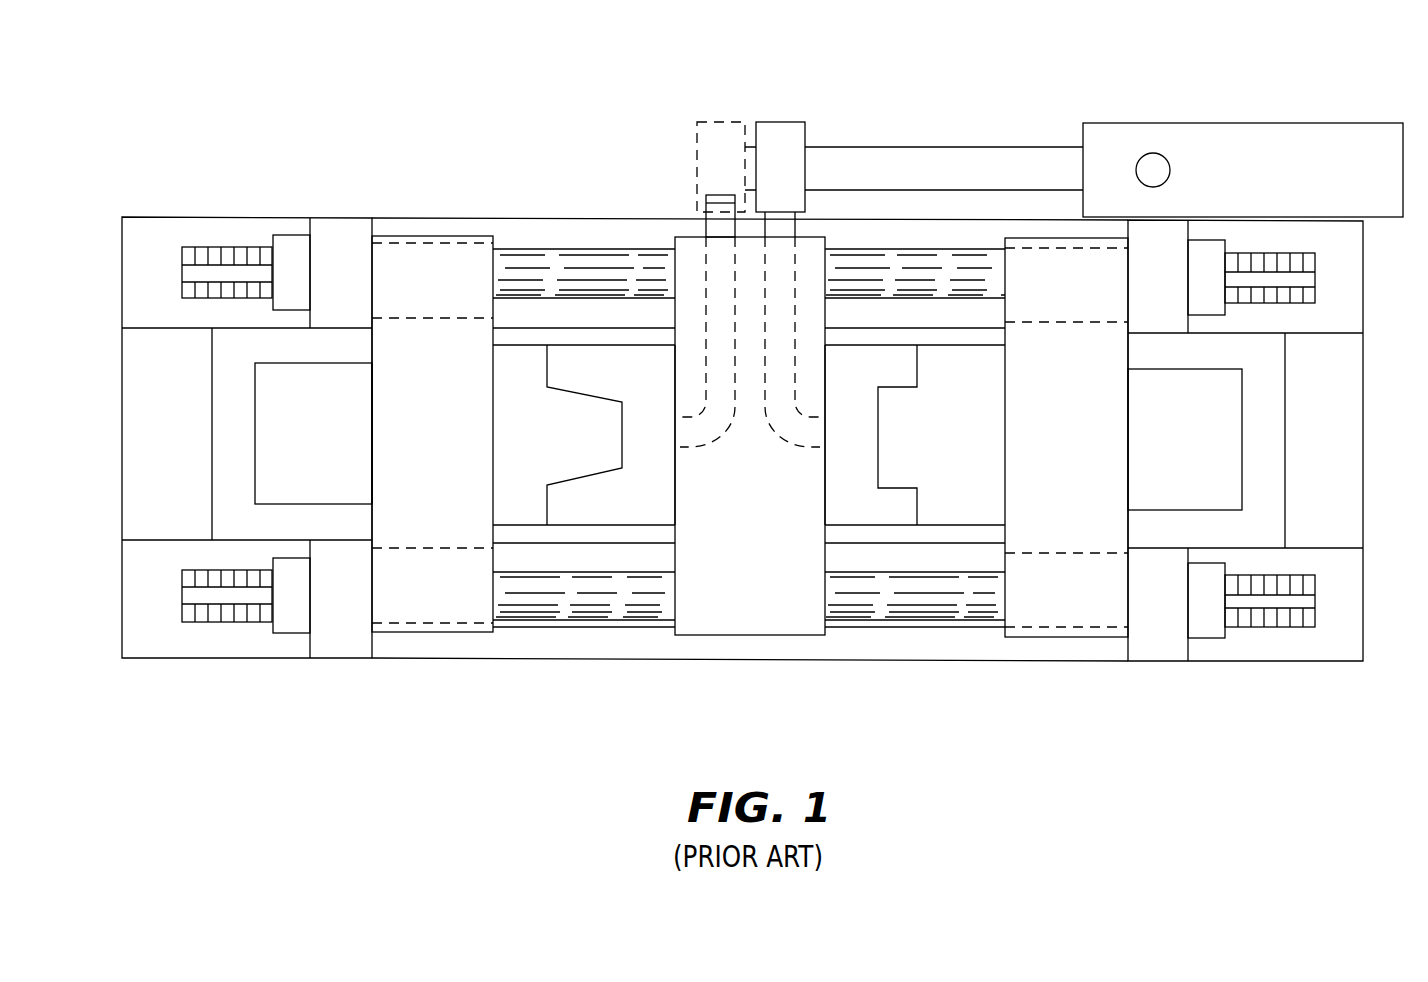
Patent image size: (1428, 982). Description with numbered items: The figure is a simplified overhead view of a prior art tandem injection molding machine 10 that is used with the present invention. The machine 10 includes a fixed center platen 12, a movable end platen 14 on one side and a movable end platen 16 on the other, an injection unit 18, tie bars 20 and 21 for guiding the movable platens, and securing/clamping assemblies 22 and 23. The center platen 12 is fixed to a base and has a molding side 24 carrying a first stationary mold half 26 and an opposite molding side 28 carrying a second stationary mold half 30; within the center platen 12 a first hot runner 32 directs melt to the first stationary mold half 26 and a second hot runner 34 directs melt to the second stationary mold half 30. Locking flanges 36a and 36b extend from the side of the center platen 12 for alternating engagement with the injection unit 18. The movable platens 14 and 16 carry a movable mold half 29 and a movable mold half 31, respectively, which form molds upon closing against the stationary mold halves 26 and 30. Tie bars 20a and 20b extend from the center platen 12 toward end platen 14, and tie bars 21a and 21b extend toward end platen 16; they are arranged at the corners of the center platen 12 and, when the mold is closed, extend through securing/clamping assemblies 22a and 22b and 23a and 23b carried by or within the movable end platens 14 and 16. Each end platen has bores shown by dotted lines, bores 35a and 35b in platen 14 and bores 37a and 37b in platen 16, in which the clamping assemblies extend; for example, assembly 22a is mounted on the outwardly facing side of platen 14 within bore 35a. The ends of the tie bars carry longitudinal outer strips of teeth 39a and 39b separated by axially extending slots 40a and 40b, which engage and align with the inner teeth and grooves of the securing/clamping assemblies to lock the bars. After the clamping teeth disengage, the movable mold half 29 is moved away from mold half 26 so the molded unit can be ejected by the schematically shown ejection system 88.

The tandem injection molding machine 10 is at (583, 92).
The fixed center platen 12 is at (752, 445).
The movable end platen 14 is at (425, 444).
The movable end platen 16 is at (1066, 477).
The injection unit 18 is at (953, 157).
The tie bars 20 is at (192, 190).
The tie bar 20a is at (195, 268).
The tie bar 20b is at (205, 597).
The tie bars 21 is at (928, 451).
The tie bar 21a is at (962, 618).
The tie bar 21b is at (968, 262).
The securing/clamping assemblies 22 is at (349, 420).
The securing/clamping assembly 22a is at (343, 228).
The securing/clamping assembly 22b is at (333, 635).
The securing/clamping assemblies 23 is at (867, 477).
The securing/clamping assembly 23a is at (1170, 647).
The securing/clamping assembly 23b is at (1165, 233).
The molding side 24 is at (672, 627).
The first stationary mold half 26 is at (657, 487).
The molding side 28 is at (825, 627).
The movable mold half 29 is at (498, 372).
The second stationary mold half 30 is at (847, 508).
The movable mold half 31 is at (993, 505).
The first hot runner 32 is at (713, 262).
The second hot runner 34 is at (785, 333).
The bore 35a is at (443, 247).
The bore 35b is at (465, 625).
The locking flange 36a is at (720, 195).
The locking flange 36b is at (790, 227).
The bore 37a is at (1055, 627).
The bore 37b is at (1055, 322).
The outer strips of teeth 39a is at (202, 292).
The outer strips of teeth 39b is at (198, 615).
The slots 40a is at (245, 268).
The slots 40b is at (213, 590).
The ejection system 88 is at (357, 450).